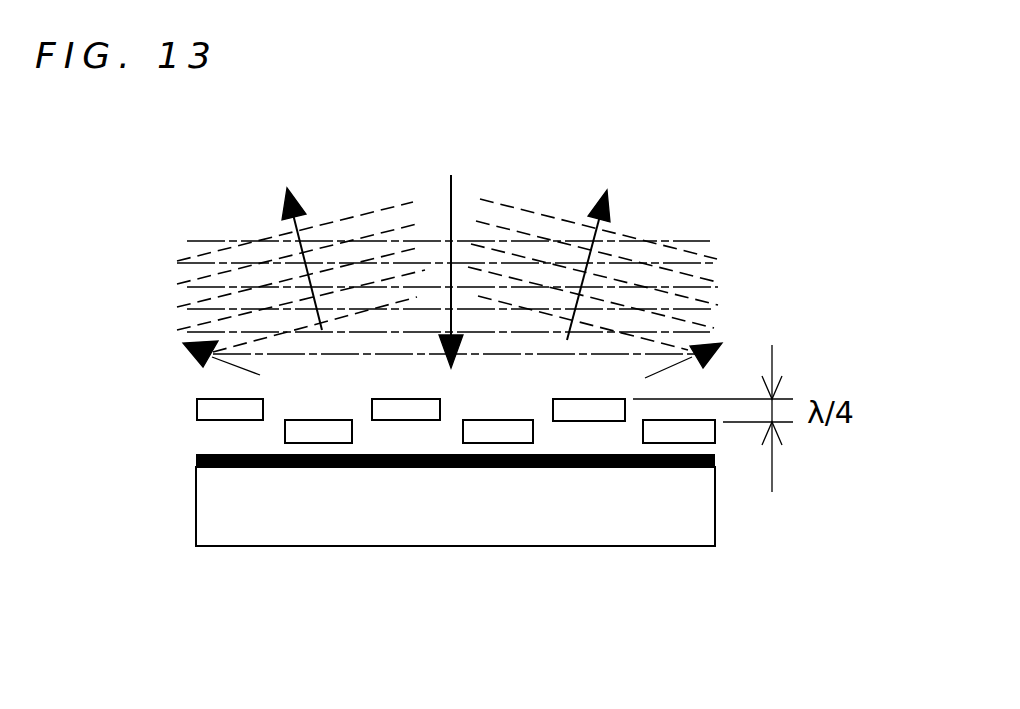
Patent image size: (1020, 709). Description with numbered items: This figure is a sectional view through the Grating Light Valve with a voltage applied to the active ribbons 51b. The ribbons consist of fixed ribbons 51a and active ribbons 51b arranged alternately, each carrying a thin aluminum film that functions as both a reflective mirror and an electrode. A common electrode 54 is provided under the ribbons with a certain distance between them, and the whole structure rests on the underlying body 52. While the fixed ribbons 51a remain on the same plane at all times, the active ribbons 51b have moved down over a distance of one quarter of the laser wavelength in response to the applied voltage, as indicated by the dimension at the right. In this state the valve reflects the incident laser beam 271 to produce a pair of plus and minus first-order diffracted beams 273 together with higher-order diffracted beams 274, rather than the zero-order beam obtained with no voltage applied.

The incident laser beam 271 is at (448, 220).
The plus and minus first-order diffracted beams 273 is at (287, 225).
The higher-order diffracted beams 274 is at (247, 372).
The fixed ribbons 51a is at (208, 408).
The active ribbons 51b is at (292, 428).
The common electrode 54 is at (198, 458).
The substrate 52 is at (208, 518).